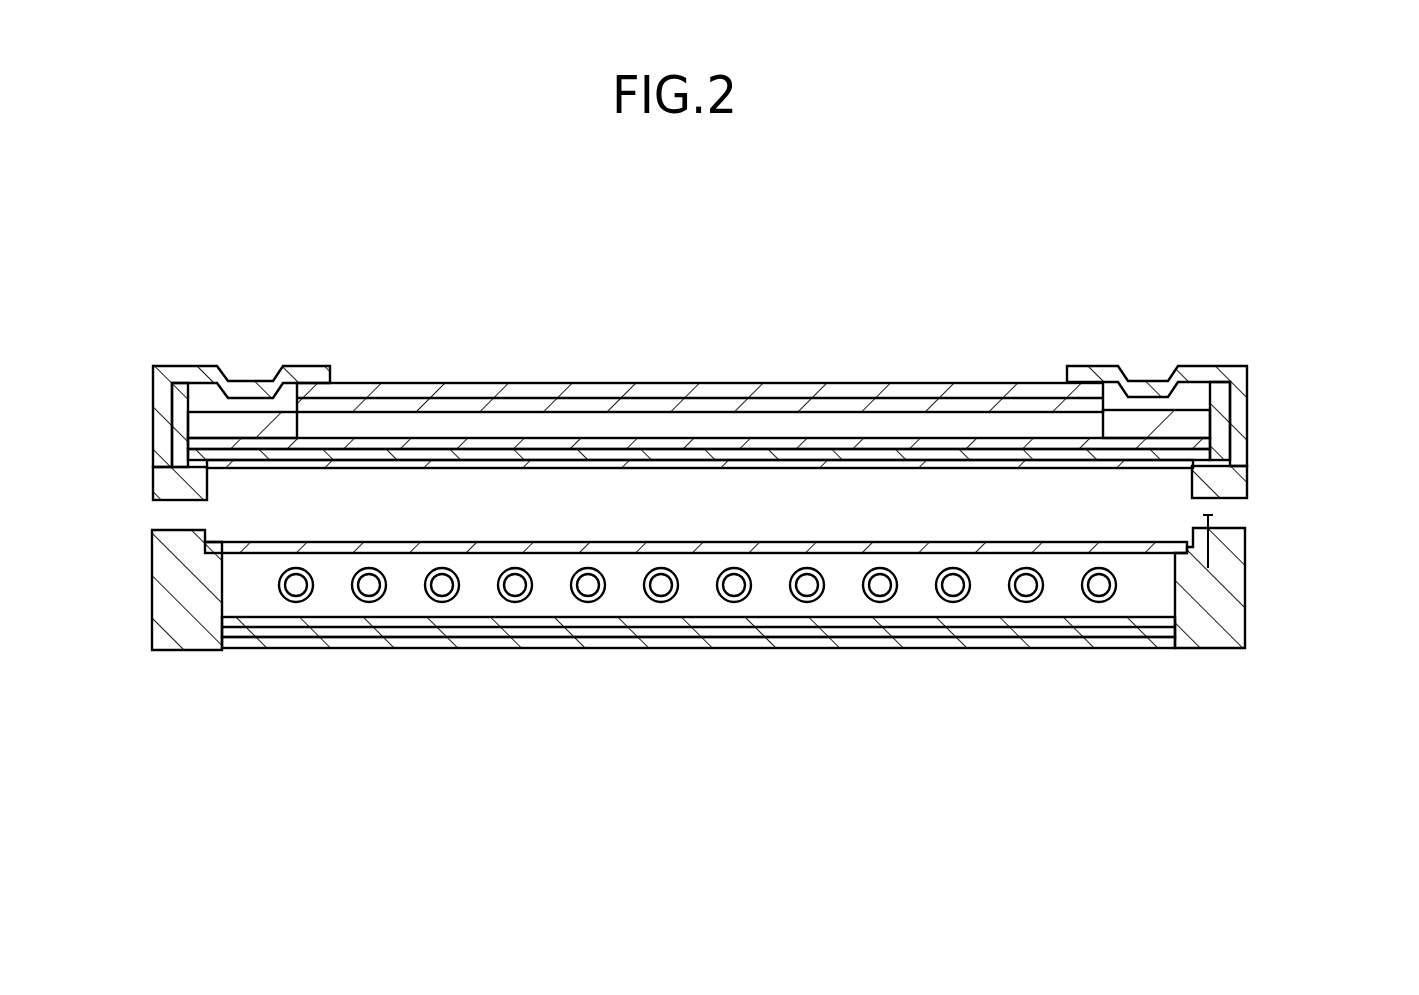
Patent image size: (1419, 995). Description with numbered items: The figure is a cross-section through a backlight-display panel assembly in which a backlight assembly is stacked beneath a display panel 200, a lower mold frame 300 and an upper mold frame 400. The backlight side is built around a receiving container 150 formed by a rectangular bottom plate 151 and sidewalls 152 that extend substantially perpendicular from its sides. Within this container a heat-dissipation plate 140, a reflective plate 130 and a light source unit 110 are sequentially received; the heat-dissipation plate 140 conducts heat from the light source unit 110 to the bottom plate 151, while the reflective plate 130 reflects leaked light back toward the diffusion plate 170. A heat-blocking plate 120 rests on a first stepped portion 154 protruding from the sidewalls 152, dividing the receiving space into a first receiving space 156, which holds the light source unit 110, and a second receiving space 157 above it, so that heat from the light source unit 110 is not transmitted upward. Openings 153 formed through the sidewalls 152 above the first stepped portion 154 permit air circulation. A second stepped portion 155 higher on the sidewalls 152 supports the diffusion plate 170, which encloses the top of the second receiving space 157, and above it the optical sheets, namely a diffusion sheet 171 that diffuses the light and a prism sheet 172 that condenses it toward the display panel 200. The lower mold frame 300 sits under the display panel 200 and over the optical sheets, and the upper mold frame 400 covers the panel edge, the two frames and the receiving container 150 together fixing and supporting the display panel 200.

The light source unit 110 is at (278, 584).
The heat-blocking plate 120 is at (220, 543).
The reflective plate 130 is at (222, 623).
The heat-dissipation plate 140 is at (230, 641).
The receiving container 150 is at (772, 554).
The bottom plate 151 is at (1168, 650).
The sidewalls 152 is at (1235, 545).
The openings 153 is at (1210, 568).
The first stepped portion 154 is at (1183, 565).
The second stepped portion 155 is at (1232, 452).
The first receiving space 156 is at (480, 603).
The second receiving space 157 is at (555, 513).
The diffusion plate 170 is at (178, 482).
The diffusion sheet 171 is at (200, 456).
The prism sheet 172 is at (205, 441).
The display panel 200 is at (563, 397).
The lower mold frame 300 is at (180, 413).
The upper mold frame 400 is at (160, 382).